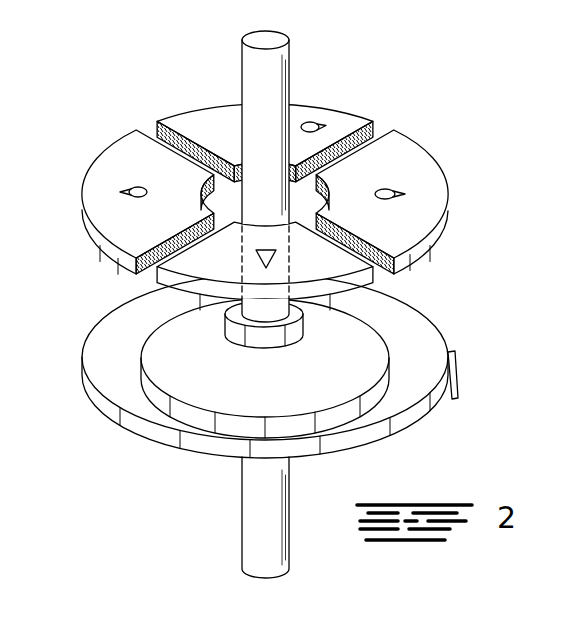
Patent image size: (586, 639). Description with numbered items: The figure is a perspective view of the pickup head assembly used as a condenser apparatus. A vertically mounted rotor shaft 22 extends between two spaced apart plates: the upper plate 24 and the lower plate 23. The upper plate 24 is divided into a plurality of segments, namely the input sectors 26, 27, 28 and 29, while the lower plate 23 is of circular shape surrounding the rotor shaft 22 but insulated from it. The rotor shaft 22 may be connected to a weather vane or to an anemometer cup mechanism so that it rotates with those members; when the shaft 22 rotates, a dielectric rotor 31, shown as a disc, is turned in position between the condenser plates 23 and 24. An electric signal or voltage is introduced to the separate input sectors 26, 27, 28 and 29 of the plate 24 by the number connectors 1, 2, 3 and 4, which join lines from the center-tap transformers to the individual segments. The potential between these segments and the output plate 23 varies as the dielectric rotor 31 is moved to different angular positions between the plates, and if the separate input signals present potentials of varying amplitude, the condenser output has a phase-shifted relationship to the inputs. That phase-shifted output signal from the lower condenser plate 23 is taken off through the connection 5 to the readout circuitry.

The number connector 1 is at (276, 258).
The number connector 2 is at (376, 197).
The number connector 3 is at (326, 126).
The number connector 4 is at (146, 195).
The output connection to Block 5 is at (459, 392).
The rotor shaft 22 is at (288, 73).
The lower plate 23 is at (160, 432).
The upper plate 24 is at (239, 207).
The input sector 26 is at (221, 271).
The input sector 27 is at (401, 166).
The input sector 28 is at (226, 138).
The input sector 29 is at (144, 163).
The dielectric rotor 31 is at (322, 424).